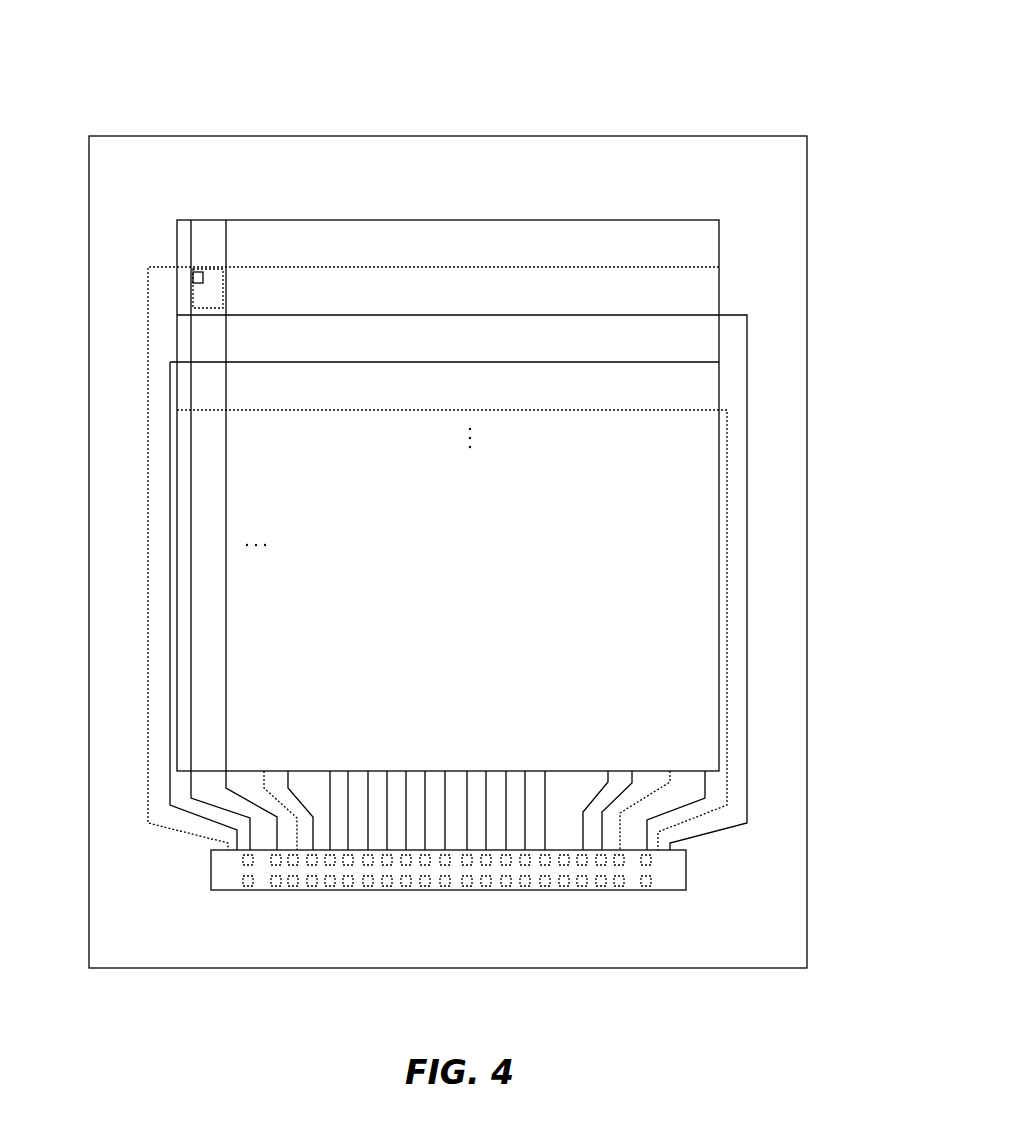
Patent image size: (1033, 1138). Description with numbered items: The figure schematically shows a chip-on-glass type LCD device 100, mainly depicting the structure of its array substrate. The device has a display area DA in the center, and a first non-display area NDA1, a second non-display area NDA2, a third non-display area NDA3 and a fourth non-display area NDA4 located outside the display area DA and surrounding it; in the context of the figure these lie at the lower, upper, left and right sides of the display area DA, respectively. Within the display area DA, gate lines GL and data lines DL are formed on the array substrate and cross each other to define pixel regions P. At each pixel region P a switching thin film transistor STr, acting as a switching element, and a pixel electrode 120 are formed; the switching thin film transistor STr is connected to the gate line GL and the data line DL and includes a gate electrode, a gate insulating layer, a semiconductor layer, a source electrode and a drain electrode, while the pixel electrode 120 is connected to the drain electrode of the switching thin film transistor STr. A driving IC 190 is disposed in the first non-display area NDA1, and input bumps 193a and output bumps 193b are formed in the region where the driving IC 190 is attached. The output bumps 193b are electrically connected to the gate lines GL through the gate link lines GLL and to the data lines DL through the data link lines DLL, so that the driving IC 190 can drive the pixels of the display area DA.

The COG type LCD device 100 is at (697, 99).
The display area DA is at (298, 220).
The first non-display area NDA1 is at (470, 934).
The second non-display area NDA2 is at (470, 181).
The third non-display area NDA3 is at (126, 531).
The fourth non-display area NDA4 is at (776, 531).
The switching thin film transistor STr is at (198, 270).
The pixel electrode 120 is at (226, 293).
The pixel region P is at (218, 337).
The gate line GL is at (397, 362).
The data line DL is at (226, 632).
The data link line DLL is at (264, 771).
The gate link line GLL is at (148, 725).
The driving IC 190 is at (632, 880).
The input bump 193a is at (651, 881).
The output bump 193b is at (651, 858).